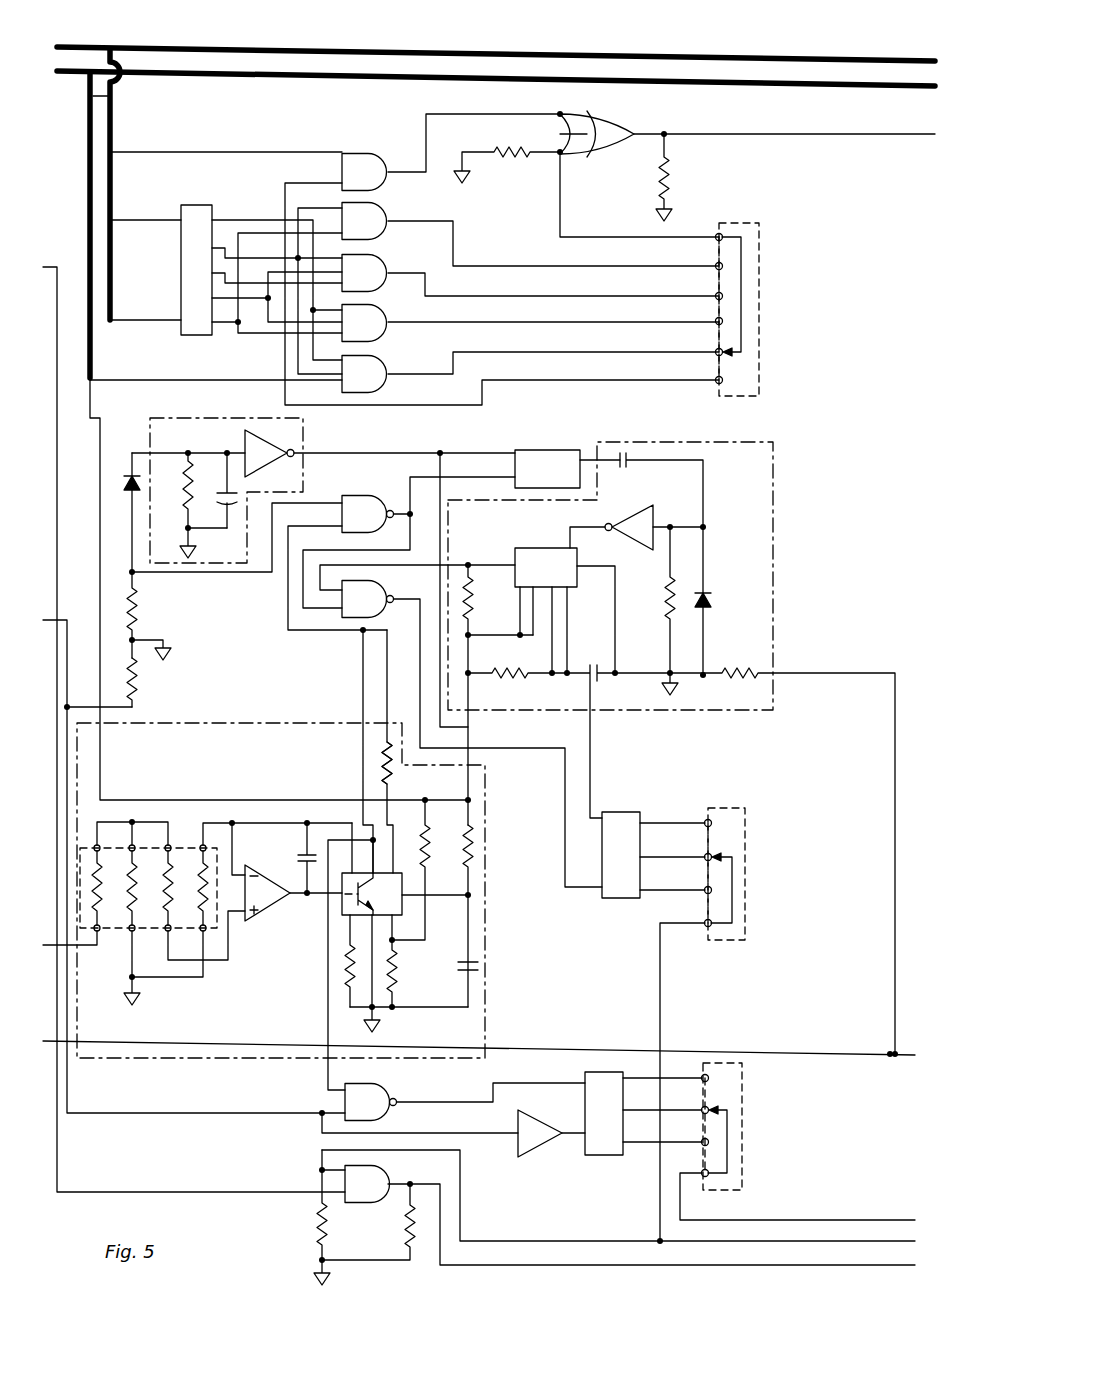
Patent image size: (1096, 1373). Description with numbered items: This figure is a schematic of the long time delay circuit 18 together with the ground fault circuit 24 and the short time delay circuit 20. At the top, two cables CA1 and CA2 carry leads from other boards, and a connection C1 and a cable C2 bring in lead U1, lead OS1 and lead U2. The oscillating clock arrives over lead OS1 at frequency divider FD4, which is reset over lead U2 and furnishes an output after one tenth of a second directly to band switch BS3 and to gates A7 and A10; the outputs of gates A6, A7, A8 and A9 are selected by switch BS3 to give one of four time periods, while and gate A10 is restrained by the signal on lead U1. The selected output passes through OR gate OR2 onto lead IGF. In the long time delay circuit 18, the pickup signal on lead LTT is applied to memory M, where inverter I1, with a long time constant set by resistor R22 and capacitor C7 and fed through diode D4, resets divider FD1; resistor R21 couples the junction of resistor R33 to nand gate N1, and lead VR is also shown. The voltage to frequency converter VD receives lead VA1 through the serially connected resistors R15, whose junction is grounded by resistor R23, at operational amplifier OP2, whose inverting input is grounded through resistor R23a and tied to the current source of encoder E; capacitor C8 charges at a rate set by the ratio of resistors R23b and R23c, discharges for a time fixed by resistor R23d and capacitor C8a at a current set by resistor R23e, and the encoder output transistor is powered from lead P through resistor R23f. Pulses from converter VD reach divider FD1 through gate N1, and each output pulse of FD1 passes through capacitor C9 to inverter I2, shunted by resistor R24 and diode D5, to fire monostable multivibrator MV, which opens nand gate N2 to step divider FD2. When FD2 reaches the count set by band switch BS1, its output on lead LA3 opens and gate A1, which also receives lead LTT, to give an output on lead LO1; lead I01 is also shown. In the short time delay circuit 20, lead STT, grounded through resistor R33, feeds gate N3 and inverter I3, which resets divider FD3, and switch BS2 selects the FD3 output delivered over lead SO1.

The cable CA1 is at (308, 70).
The cable CA2 is at (394, 48).
The connection C1 is at (112, 96).
The cable C2 is at (112, 124).
The lead U1 is at (226, 140).
The lead U2 is at (166, 320).
The lead OS1 is at (170, 220).
The frequency divider FD4 is at (199, 259).
The and gate A10 is at (451, 152).
The gate A6 is at (530, 235).
The gate A7 is at (530, 276).
The gate A8 is at (530, 323).
The gate A9 is at (530, 372).
The OR gate OR2 is at (586, 174).
The ground fault circuit 24 is at (636, 118).
The lead IGF is at (828, 138).
The band switch BS3 is at (760, 290).
The lead LTT is at (60, 280).
The lead STT is at (77, 618).
The line VR is at (162, 380).
The lead P is at (113, 418).
The memory M is at (225, 418).
The inverter I1 is at (323, 453).
The resistor R22 is at (185, 490).
The capacitor C7 is at (222, 497).
The diode D4 is at (116, 488).
The long time delay circuit 18 is at (396, 448).
The frequency divider FD1 is at (567, 469).
The capacitor C9 is at (663, 565).
The first nand gate N1 is at (401, 555).
The second nand gate N2 is at (461, 724).
The inverter I2 is at (636, 527).
The monostable multivibrator MV is at (566, 612).
The resistor R24 is at (666, 602).
The diode D5 is at (712, 597).
The frequency divider FD2 is at (653, 845).
The band switch BS1 is at (746, 872).
The voltage to frequency converter VD is at (212, 773).
The resistor R23f is at (382, 776).
The resistor R23b is at (432, 830).
The resistor R23d is at (474, 850).
The capacitor C8a is at (480, 965).
The voltage to frequency encoder E is at (388, 904).
The operational amplifier OP2 is at (293, 893).
The capacitor C8 is at (300, 853).
The lead VA1 is at (144, 904).
The resistors R15 is at (165, 886).
The resistor R23a is at (208, 903).
The resistor R23 is at (134, 903).
The resistor R23e is at (345, 960).
The resistor R23c is at (411, 975).
The line I01 is at (156, 1043).
The gate N3 is at (453, 1108).
The inverter I3 is at (551, 1133).
The divider FD3 is at (580, 1108).
The short time delay circuit 20 is at (562, 1160).
The switch BS2 is at (743, 1112).
The lead SO1 is at (905, 1221).
The and gate A1 is at (364, 1217).
The lead LA3 is at (905, 1242).
The lead LO1 is at (903, 1266).
The resistor R21 is at (160, 616).
The resistor R33 is at (140, 676).